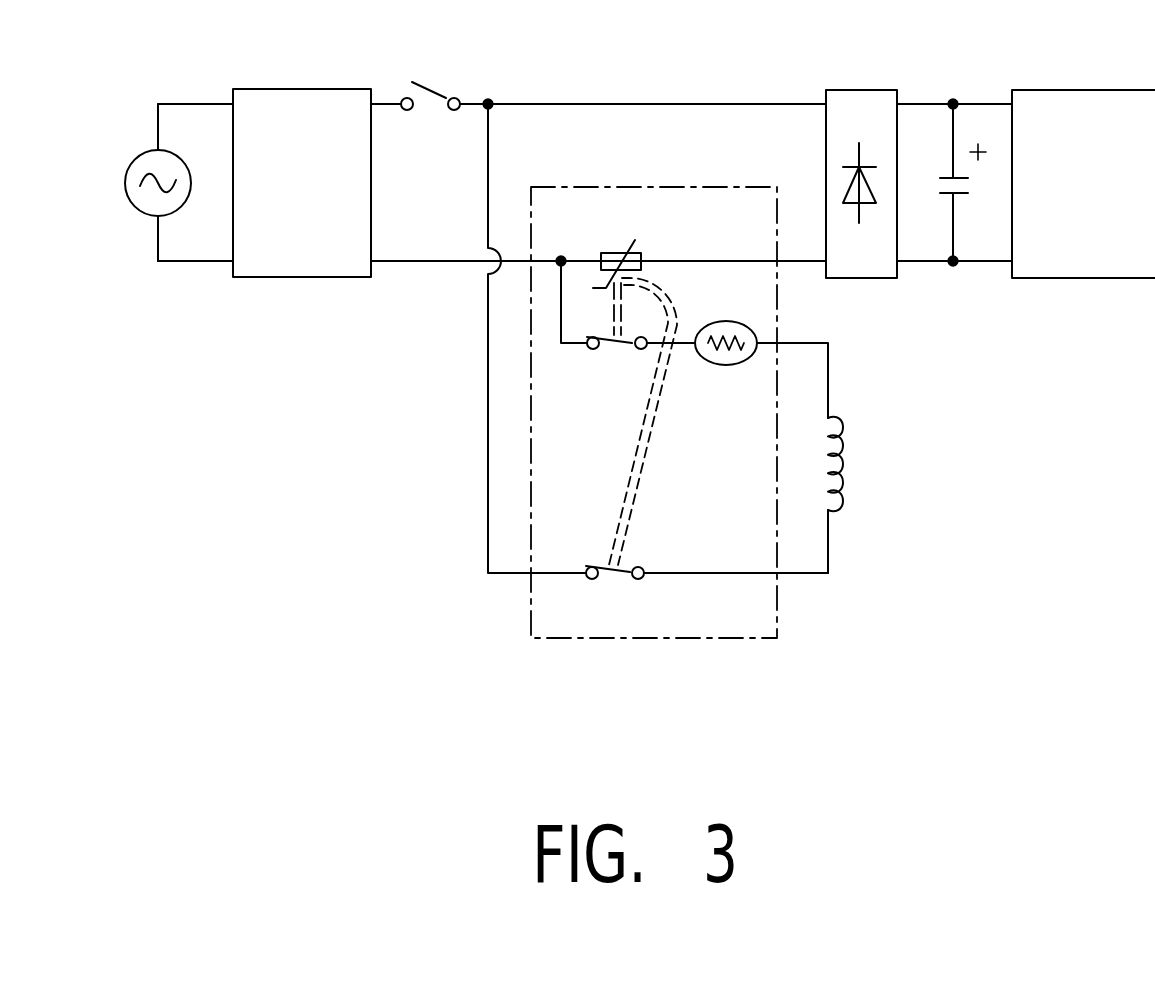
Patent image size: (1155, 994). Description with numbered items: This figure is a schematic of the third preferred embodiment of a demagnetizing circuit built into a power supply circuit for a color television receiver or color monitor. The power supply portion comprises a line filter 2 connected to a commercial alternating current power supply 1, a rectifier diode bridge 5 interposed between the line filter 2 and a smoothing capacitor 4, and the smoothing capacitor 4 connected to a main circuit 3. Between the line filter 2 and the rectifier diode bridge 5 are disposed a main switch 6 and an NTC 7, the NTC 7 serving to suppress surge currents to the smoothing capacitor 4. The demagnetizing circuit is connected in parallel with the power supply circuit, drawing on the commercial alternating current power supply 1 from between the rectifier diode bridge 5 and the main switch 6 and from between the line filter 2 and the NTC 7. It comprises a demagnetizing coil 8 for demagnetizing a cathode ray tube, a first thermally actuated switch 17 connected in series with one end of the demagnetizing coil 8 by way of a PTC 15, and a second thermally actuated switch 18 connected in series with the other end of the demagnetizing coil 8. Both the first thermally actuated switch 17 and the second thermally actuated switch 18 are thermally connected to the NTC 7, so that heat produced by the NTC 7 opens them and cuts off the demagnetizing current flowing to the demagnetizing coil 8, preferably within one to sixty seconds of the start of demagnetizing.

The commercial alternating current power supply 1 is at (133, 156).
The line filter 2 is at (336, 89).
The main circuit 3 is at (1048, 90).
The smoothing capacitor 4 is at (948, 177).
The rectifier diode bridge 5 is at (862, 90).
The main switch 6 is at (425, 86).
The NTC 7 is at (613, 255).
The demagnetizing coil 8 is at (840, 447).
The PTC 15 is at (727, 367).
The first thermally actuated switch 17 is at (620, 348).
The second thermally actuated switch 18 is at (607, 568).